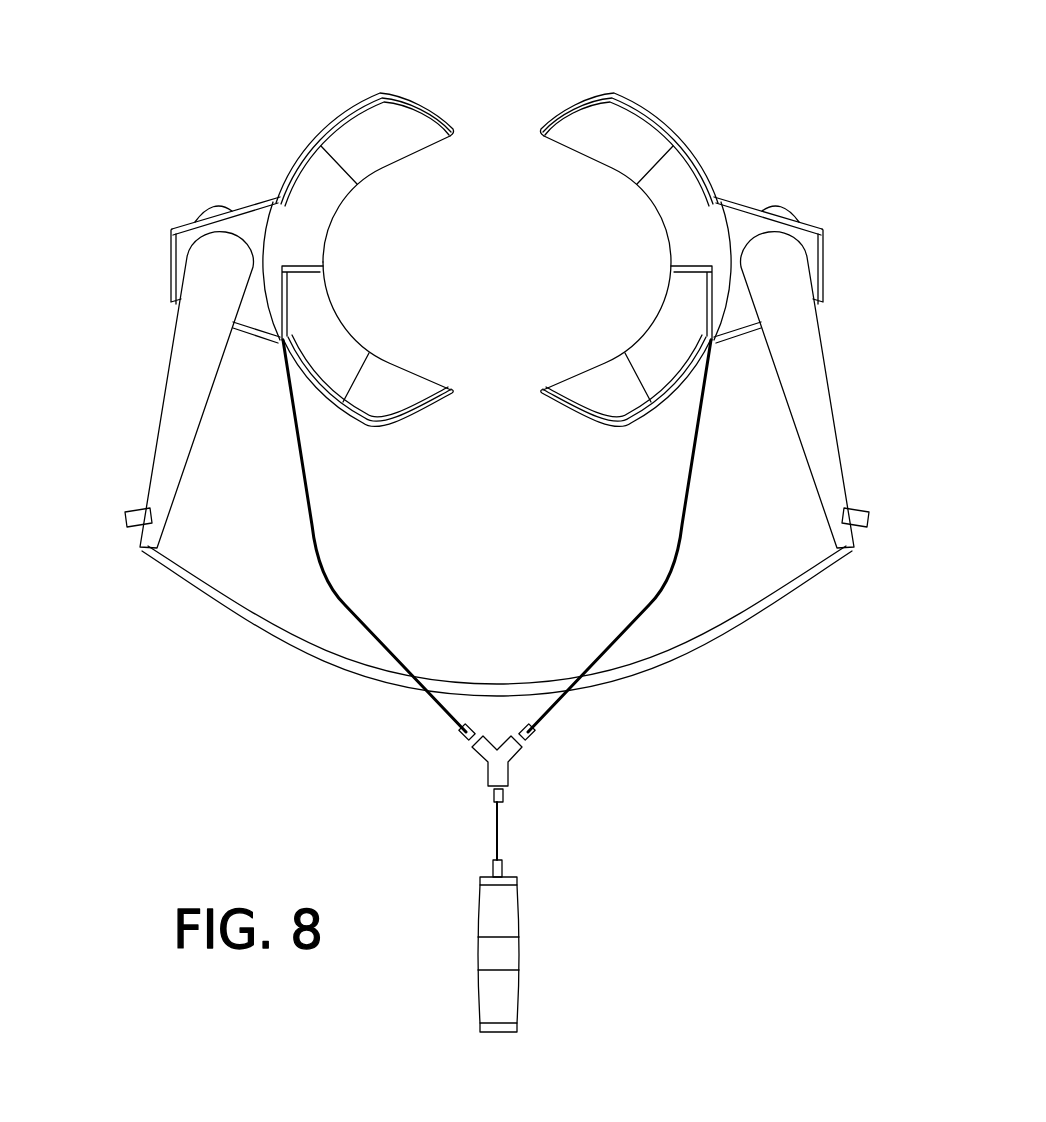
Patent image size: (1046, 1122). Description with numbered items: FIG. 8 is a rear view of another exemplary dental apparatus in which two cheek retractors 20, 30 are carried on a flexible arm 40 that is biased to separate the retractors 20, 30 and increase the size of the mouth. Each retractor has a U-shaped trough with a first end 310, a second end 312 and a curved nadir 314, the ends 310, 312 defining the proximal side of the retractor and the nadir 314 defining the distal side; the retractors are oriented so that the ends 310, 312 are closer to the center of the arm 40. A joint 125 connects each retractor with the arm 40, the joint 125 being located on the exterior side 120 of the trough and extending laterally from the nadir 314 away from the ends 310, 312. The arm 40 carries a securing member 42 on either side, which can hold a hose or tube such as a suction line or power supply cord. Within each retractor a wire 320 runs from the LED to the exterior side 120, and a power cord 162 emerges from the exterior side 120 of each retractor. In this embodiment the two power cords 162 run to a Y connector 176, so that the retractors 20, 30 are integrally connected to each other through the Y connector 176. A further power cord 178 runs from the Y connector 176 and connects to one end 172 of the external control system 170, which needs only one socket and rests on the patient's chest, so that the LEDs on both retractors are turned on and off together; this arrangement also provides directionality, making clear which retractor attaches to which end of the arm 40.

The cheek retractor 20 is at (650, 81).
The cheek retractor 30 is at (344, 81).
The arm 40 is at (262, 657).
The securing member 42 is at (133, 510).
The exterior side 120 is at (398, 403).
The joint 125 is at (187, 244).
The power cord 162 is at (315, 515).
The external control system 170 is at (490, 984).
The first end 172 is at (483, 877).
The Y connector 176 is at (500, 770).
The power cord 178 is at (502, 845).
The first end 310 is at (433, 110).
The second end 312 is at (411, 427).
The curved nadir 314 is at (263, 255).
The wire 320 is at (300, 264).